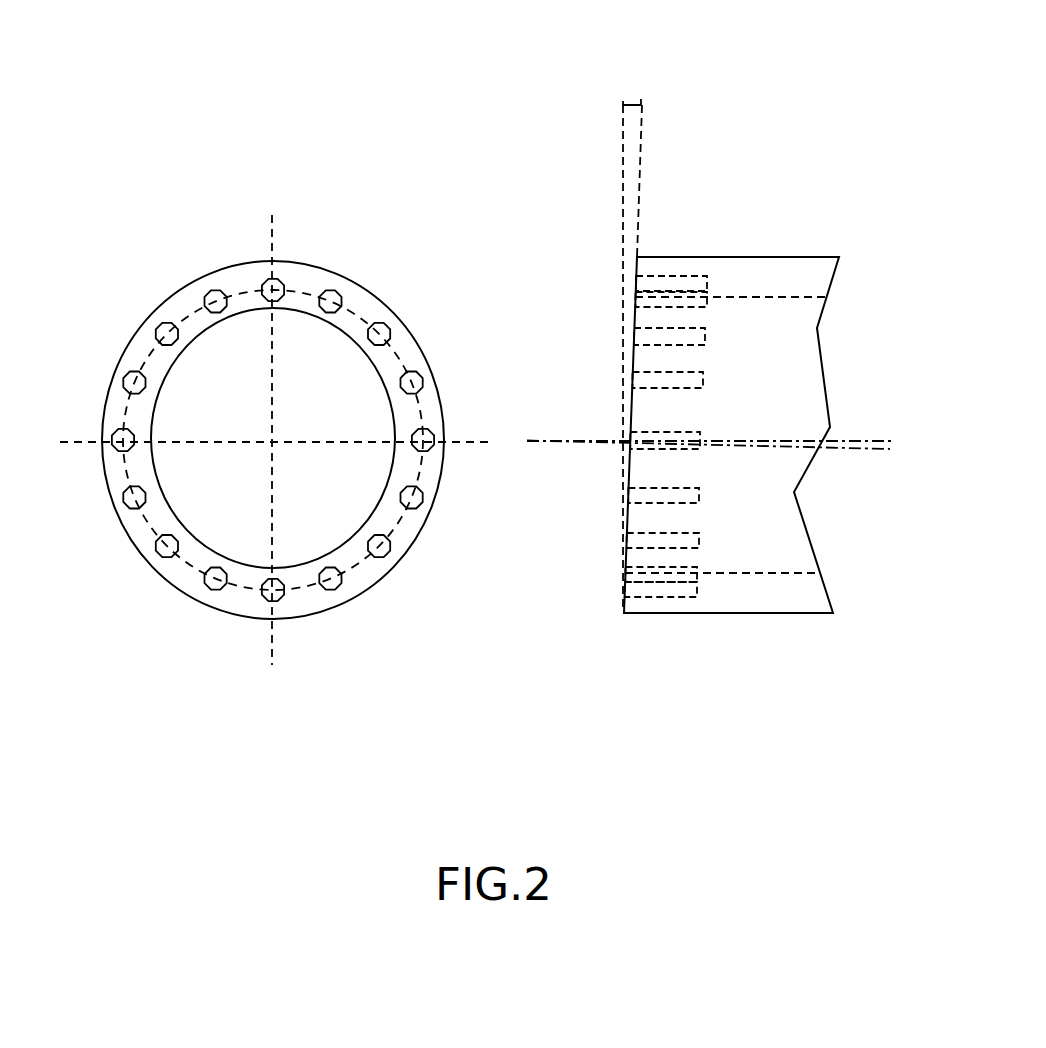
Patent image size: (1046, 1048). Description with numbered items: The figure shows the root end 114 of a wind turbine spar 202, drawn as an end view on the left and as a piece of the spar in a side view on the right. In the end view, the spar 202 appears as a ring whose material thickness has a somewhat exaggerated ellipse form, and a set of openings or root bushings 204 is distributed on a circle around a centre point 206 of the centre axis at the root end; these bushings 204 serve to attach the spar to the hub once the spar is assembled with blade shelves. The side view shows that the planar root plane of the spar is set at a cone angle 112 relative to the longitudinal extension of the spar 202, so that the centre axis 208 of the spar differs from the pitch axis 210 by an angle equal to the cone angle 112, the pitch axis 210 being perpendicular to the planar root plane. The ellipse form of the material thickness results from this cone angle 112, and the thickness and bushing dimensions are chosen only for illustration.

The cone angle 112 is at (631, 105).
The root end 114 is at (427, 603).
The WT spar 202 is at (311, 262).
The root bushings 204 is at (425, 375).
The centre point 206 is at (272, 443).
The centre axis 208 is at (880, 441).
The pitch axis 210 is at (877, 455).